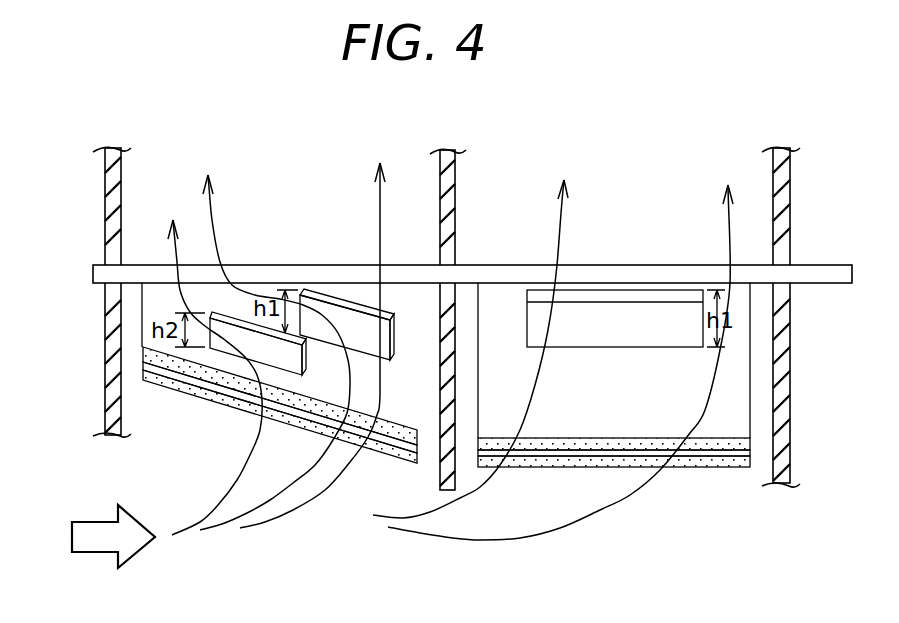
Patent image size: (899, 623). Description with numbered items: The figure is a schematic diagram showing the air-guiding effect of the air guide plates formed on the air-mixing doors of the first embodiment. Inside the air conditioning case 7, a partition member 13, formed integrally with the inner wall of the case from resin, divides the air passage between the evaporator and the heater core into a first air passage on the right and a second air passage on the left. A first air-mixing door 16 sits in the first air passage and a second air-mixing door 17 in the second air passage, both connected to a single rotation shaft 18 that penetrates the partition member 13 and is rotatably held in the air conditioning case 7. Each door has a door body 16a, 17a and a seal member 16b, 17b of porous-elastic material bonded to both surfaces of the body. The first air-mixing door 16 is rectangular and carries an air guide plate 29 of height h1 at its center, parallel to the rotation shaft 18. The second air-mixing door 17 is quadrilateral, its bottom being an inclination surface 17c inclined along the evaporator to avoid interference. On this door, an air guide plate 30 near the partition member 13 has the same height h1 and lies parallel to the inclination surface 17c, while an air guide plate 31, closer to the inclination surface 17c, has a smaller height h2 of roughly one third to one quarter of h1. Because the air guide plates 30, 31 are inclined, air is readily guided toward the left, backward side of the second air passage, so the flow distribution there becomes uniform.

The air conditioning case 7 is at (788, 212).
The partition member 13 is at (440, 478).
The first air-mixing door 16 is at (733, 413).
The door body 16a is at (720, 455).
The seal member 16b is at (688, 467).
The second air-mixing door 17 is at (160, 300).
The door body 17a is at (162, 368).
The seal member 17b is at (190, 392).
The inclination surface 17c is at (152, 347).
The rotation shaft 18 is at (653, 265).
The air guide plate 29 is at (655, 348).
The air guide plate 30 is at (350, 297).
The air guide plate 31 is at (228, 313).